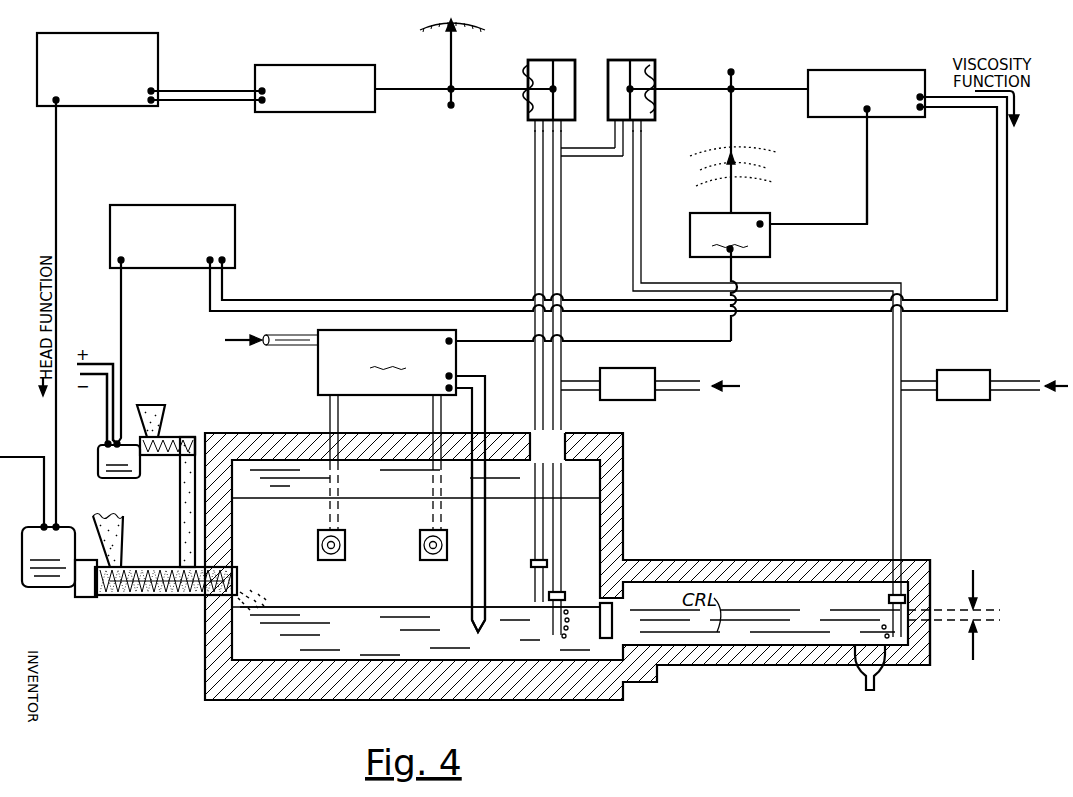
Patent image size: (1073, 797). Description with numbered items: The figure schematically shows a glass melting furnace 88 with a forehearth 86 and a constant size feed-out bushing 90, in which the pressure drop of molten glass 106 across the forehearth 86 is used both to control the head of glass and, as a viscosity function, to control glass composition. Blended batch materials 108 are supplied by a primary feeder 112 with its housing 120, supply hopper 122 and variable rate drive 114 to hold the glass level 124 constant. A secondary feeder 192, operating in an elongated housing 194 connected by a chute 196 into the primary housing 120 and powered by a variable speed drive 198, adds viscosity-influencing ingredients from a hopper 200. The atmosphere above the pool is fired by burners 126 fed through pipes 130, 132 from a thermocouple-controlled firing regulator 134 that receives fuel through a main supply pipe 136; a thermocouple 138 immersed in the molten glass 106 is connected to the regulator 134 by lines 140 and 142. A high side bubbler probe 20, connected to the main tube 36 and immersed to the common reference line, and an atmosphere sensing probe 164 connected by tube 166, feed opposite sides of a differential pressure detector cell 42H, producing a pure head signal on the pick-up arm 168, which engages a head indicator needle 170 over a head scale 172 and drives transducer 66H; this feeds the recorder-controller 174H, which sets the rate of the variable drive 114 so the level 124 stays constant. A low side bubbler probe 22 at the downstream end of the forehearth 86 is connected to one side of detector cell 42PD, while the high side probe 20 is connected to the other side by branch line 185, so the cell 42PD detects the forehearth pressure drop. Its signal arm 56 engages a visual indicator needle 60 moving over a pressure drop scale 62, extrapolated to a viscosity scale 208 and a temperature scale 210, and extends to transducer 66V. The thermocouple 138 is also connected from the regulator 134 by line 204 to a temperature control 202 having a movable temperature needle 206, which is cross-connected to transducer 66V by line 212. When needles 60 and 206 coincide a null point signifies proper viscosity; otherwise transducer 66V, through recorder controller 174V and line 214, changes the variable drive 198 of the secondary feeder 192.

The recorder-controller 174H is at (72, 33).
The transducer 66H is at (287, 65).
The melting furnace head or level scale 172 is at (430, 23).
The head indicator needle 170 is at (448, 72).
The head or level signal pick-up arm 168 is at (506, 89).
The differential pressure detector cell 42H is at (530, 60).
The differential pressure detector cell 42PD is at (655, 60).
The branch line 185 is at (578, 158).
The tube 166 is at (534, 190).
The atmosphere sensing probe 164 is at (533, 566).
The main tube 36 is at (563, 203).
The high side bubbler probe 20 is at (553, 630).
The low side bubbler probe 22 is at (890, 617).
The pressure drop signal arm 56 is at (728, 84).
The visual indicator needle 60 is at (736, 131).
The pressure drop scale 62 is at (773, 149).
The viscosity scale 208 is at (700, 158).
The temperature scale 210 is at (698, 170).
The movable temperature needle 206 is at (728, 203).
The transducer 66V is at (820, 70).
The line 212 is at (868, 190).
The temperature control 202 is at (730, 235).
The line 204 is at (733, 341).
The recorder controller 174V is at (152, 205).
The line 214 is at (120, 300).
The main supply pipe 136 is at (285, 347).
The thermocouple-controlled firing regulator 134 is at (387, 362).
The pipe 130 is at (330, 412).
The pipe 132 is at (433, 412).
The burners 126 is at (318, 542).
The line 142 is at (470, 570).
The line 140 is at (484, 590).
The thermocouple 138 is at (477, 632).
The glass melting furnace 88 is at (624, 443).
The forehearth 86 is at (937, 561).
The feed-out bushing 90 is at (864, 680).
The molten glass 106 is at (362, 648).
The glass level 124 is at (328, 606).
The blended batch materials 108 is at (243, 603).
The variable rate drive 114 is at (52, 590).
The housing 120 is at (124, 597).
The primary feeder 112 is at (160, 598).
The supply hopper 122 is at (126, 522).
The chute 196 is at (180, 518).
The secondary feeder 192 is at (178, 440).
The elongated housing 194 is at (168, 432).
The hopper 200 is at (166, 398).
The variable speed drive 198 is at (118, 480).